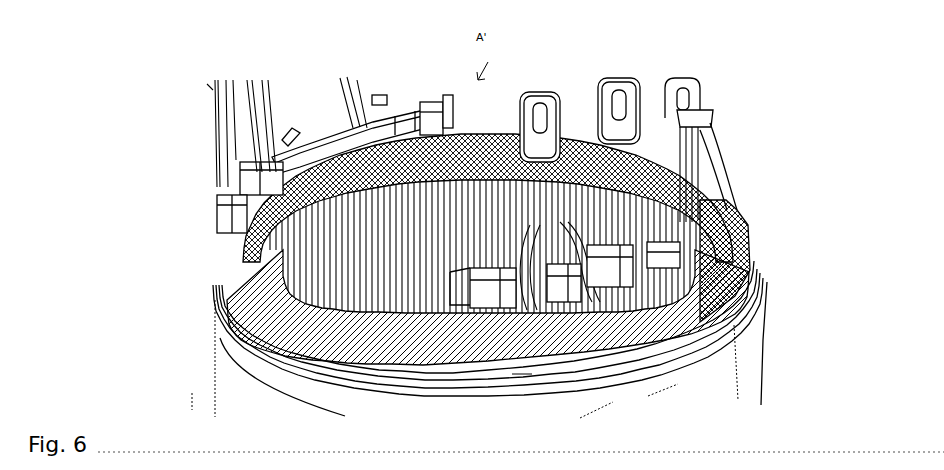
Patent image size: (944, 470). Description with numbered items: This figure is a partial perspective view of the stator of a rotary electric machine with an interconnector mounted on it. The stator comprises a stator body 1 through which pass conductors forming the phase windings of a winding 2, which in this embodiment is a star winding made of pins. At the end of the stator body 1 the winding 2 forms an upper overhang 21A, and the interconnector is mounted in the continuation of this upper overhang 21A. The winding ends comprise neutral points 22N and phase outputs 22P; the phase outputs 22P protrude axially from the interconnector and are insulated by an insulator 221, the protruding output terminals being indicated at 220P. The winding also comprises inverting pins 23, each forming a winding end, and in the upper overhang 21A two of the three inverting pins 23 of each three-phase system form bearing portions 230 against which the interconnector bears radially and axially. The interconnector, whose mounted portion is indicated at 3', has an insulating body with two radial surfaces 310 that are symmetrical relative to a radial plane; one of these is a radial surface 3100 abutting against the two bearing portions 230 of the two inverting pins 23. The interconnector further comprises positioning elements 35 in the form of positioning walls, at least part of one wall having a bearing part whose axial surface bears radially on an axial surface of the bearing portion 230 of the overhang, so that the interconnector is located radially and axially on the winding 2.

The stator body 1 is at (765, 394).
The winding 2 is at (772, 257).
The upper overhang 21A is at (214, 300).
The neutral points 22N is at (466, 105).
The phase outputs 22P is at (758, 247).
The power terminals 220P is at (578, 95).
The insulator 221 is at (722, 188).
The inverting pins 23 is at (482, 115).
The bearing portion 230 is at (405, 88).
The connector portion 3' is at (298, 116).
The radial surfaces 310 is at (340, 78).
The radial surface 3100 is at (629, 401).
The positioning element 35 is at (523, 378).